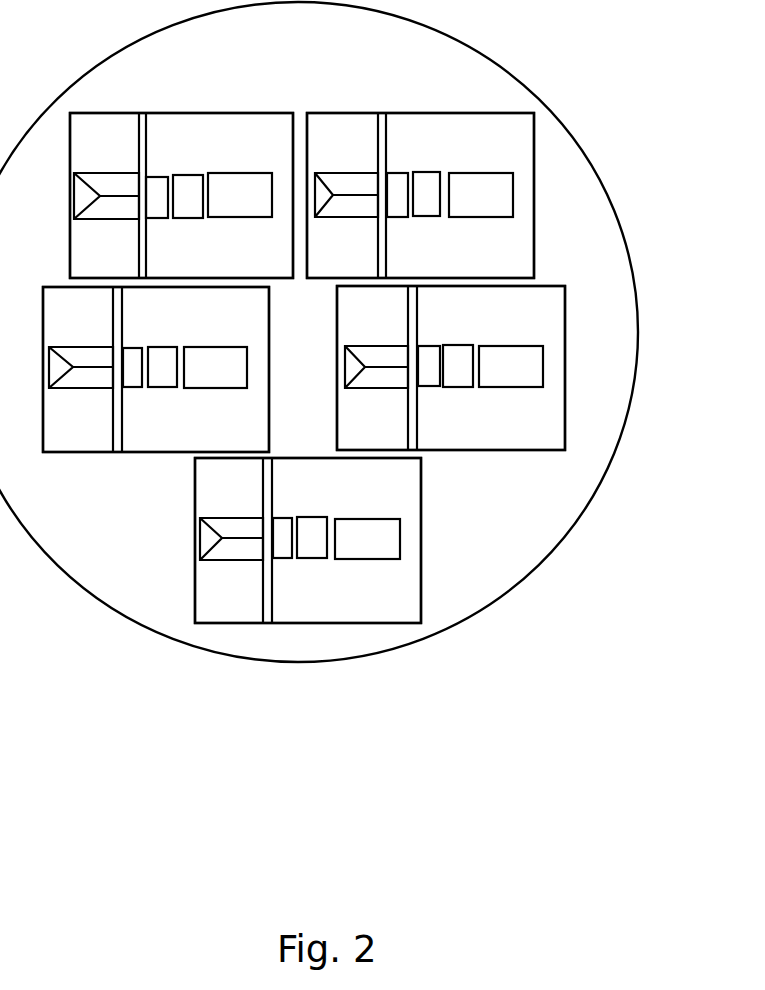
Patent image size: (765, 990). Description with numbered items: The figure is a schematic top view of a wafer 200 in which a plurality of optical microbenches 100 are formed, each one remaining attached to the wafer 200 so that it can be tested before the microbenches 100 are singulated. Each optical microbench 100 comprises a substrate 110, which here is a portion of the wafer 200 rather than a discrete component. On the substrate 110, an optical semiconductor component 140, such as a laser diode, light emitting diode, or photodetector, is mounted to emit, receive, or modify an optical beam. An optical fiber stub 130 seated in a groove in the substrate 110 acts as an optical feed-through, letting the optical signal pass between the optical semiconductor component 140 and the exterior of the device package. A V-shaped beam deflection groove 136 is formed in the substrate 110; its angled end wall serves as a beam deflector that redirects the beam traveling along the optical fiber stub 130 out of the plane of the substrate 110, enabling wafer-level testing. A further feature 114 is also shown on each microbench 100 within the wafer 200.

The wafer 200 is at (545, 82).
The optical microbench 100 is at (182, 106).
The substrate 110 is at (282, 276).
The scribe line 114 is at (145, 136).
The optical fiber stub 130 is at (157, 210).
The V-shaped beam deflection groove 136 is at (108, 183).
The optical semiconductor component 140 is at (235, 185).